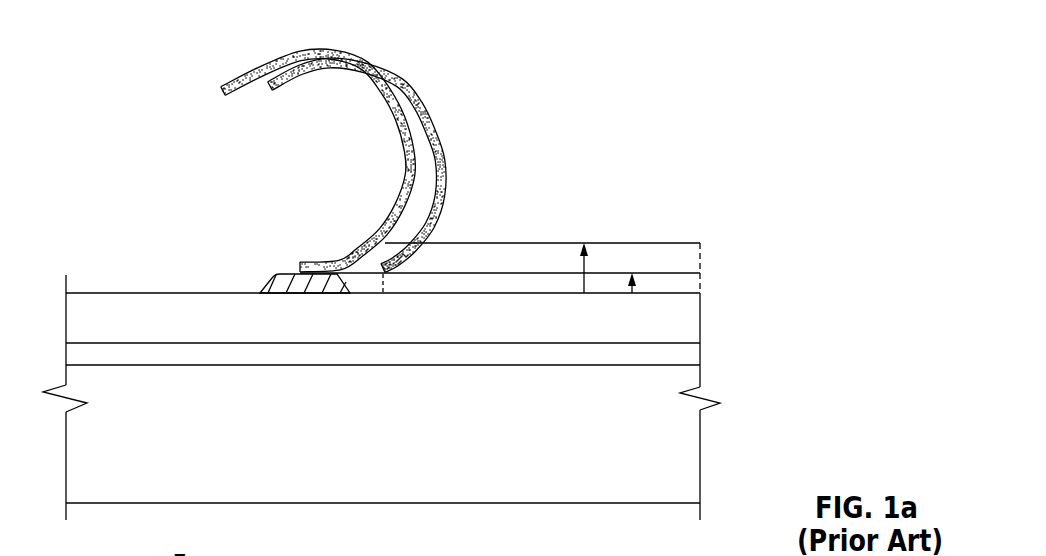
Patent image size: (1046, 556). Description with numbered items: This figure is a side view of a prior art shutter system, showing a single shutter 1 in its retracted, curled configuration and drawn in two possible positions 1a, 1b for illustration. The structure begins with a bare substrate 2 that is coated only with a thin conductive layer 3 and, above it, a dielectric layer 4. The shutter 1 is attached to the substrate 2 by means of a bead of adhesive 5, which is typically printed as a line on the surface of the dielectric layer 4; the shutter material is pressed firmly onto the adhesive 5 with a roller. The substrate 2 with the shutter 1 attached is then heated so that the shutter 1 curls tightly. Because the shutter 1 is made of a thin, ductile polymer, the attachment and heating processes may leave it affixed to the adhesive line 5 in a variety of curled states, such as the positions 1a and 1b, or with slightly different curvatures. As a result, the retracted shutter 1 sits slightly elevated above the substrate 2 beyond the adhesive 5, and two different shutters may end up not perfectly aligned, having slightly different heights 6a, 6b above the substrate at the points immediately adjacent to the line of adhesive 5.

The shutter 1 is at (339, 138).
The first shutter position 1a is at (412, 80).
The second shutter position 1b is at (330, 47).
The bare substrate 2 is at (685, 437).
The thin conductive layer 3 is at (678, 350).
The dielectric layer 4 is at (685, 310).
The bead of adhesive 5 is at (263, 290).
The first shutter height 6a is at (633, 291).
The second shutter height 6b is at (586, 265).